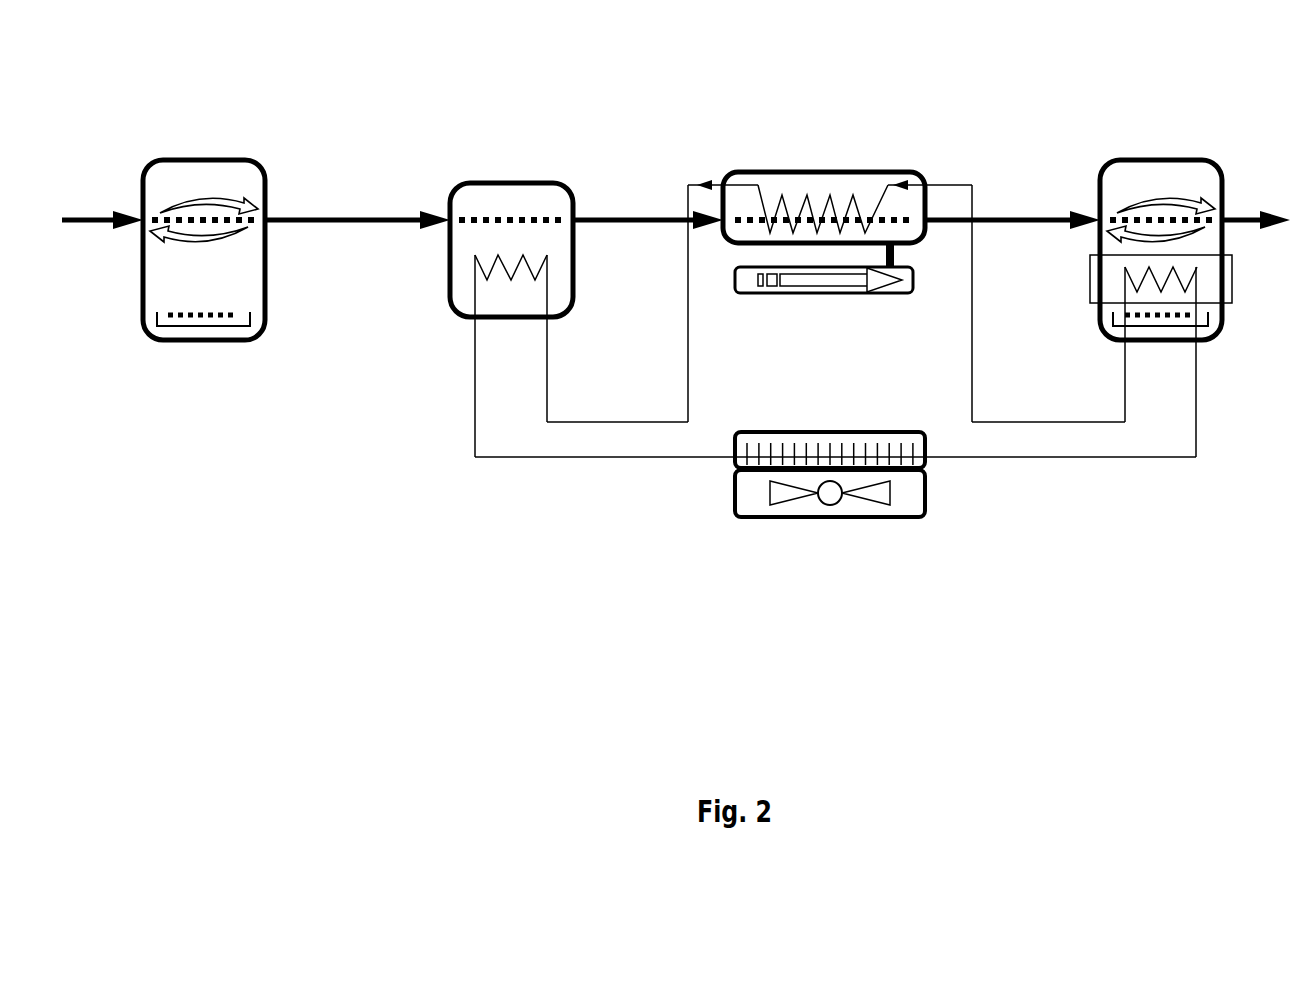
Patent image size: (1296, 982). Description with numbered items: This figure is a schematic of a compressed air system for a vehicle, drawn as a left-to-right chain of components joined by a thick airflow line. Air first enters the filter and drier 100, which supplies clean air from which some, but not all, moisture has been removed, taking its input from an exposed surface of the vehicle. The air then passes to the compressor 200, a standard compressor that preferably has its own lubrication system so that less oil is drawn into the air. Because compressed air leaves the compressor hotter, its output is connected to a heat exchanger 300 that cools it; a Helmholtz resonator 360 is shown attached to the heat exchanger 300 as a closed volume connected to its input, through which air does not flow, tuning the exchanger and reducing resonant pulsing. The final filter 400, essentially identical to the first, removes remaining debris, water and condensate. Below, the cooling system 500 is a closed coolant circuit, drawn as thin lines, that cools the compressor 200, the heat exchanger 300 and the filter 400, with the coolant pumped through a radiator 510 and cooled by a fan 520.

The filter and drier 100 is at (184, 133).
The compressor 200 is at (504, 160).
The heat exchanger 300 is at (845, 150).
The Helmholtz resonator 360 is at (824, 299).
The filter 400 is at (1161, 138).
The cooling system 500 is at (983, 560).
The radiator 510 is at (830, 409).
The fan 520 is at (810, 539).